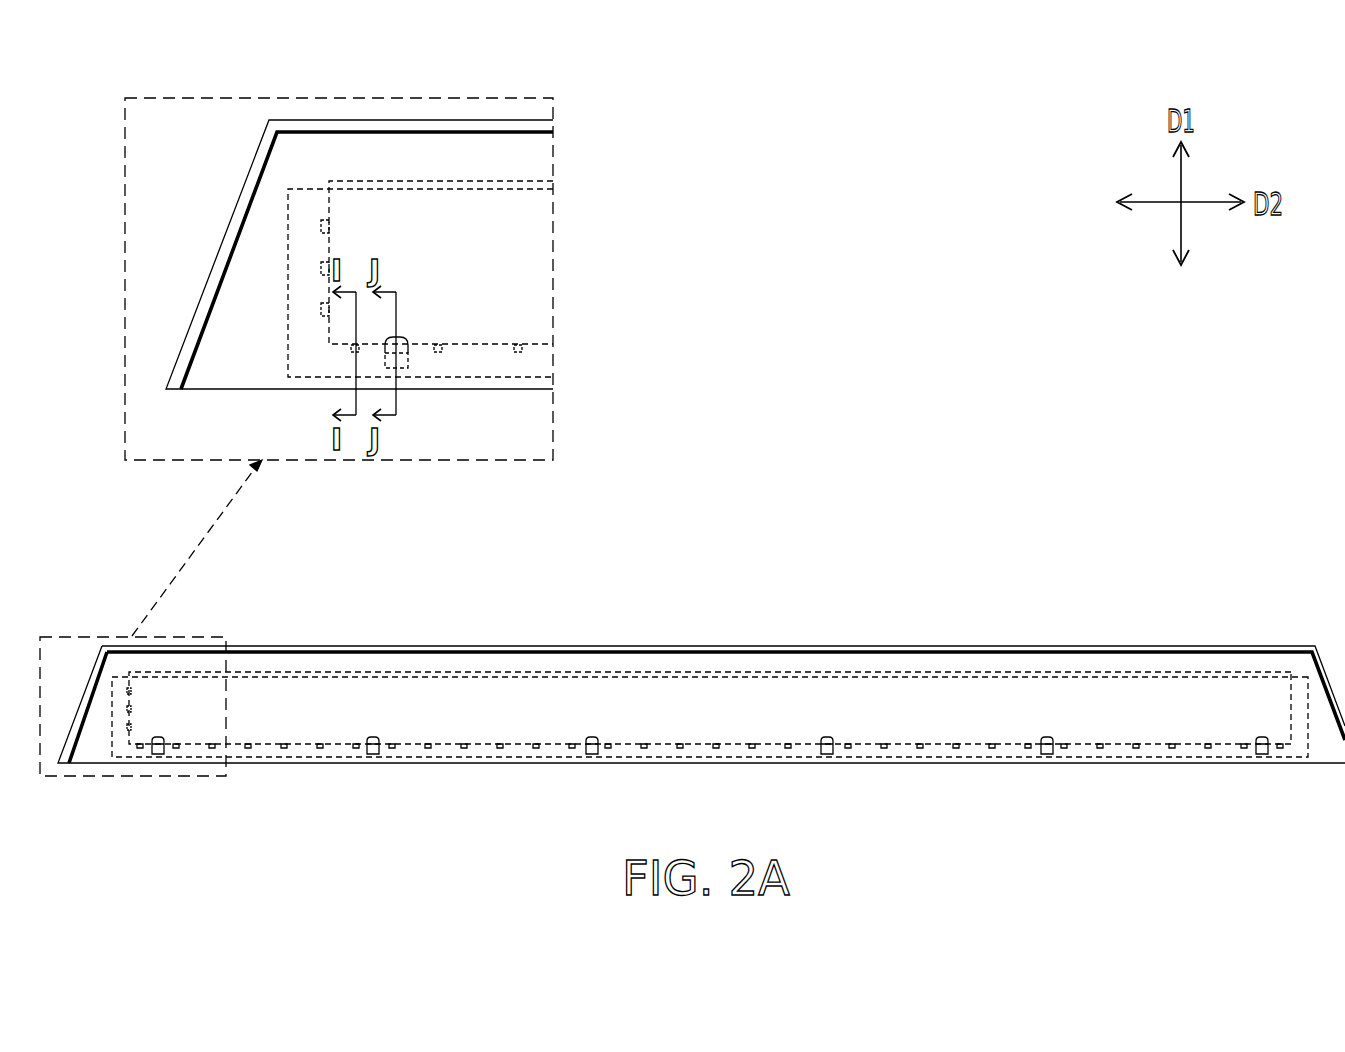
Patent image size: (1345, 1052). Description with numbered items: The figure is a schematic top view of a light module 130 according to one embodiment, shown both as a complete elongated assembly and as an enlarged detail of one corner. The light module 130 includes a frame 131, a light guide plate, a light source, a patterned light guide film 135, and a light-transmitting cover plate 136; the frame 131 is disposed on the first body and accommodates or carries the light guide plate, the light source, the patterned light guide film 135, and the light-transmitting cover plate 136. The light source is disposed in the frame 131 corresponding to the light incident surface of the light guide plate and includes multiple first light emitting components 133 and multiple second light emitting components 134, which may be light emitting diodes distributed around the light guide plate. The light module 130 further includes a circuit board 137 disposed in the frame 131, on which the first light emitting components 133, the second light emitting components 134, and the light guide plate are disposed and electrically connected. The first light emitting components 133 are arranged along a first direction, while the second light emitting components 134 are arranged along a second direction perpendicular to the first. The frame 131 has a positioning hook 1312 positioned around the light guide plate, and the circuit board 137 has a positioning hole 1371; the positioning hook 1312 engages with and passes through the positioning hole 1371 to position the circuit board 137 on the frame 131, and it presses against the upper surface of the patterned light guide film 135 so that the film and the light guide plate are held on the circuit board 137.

The light module 130 is at (1053, 613).
The frame 131 is at (229, 241).
The first light emitting components 133 is at (321, 222).
The second light emitting components 134 is at (522, 348).
The patterned light guide film 135 is at (445, 205).
The light-transmitting cover plate 136 is at (334, 156).
The circuit board 137 is at (302, 290).
The positioning hook 1312 is at (408, 340).
The positioning hole 1371 is at (410, 366).